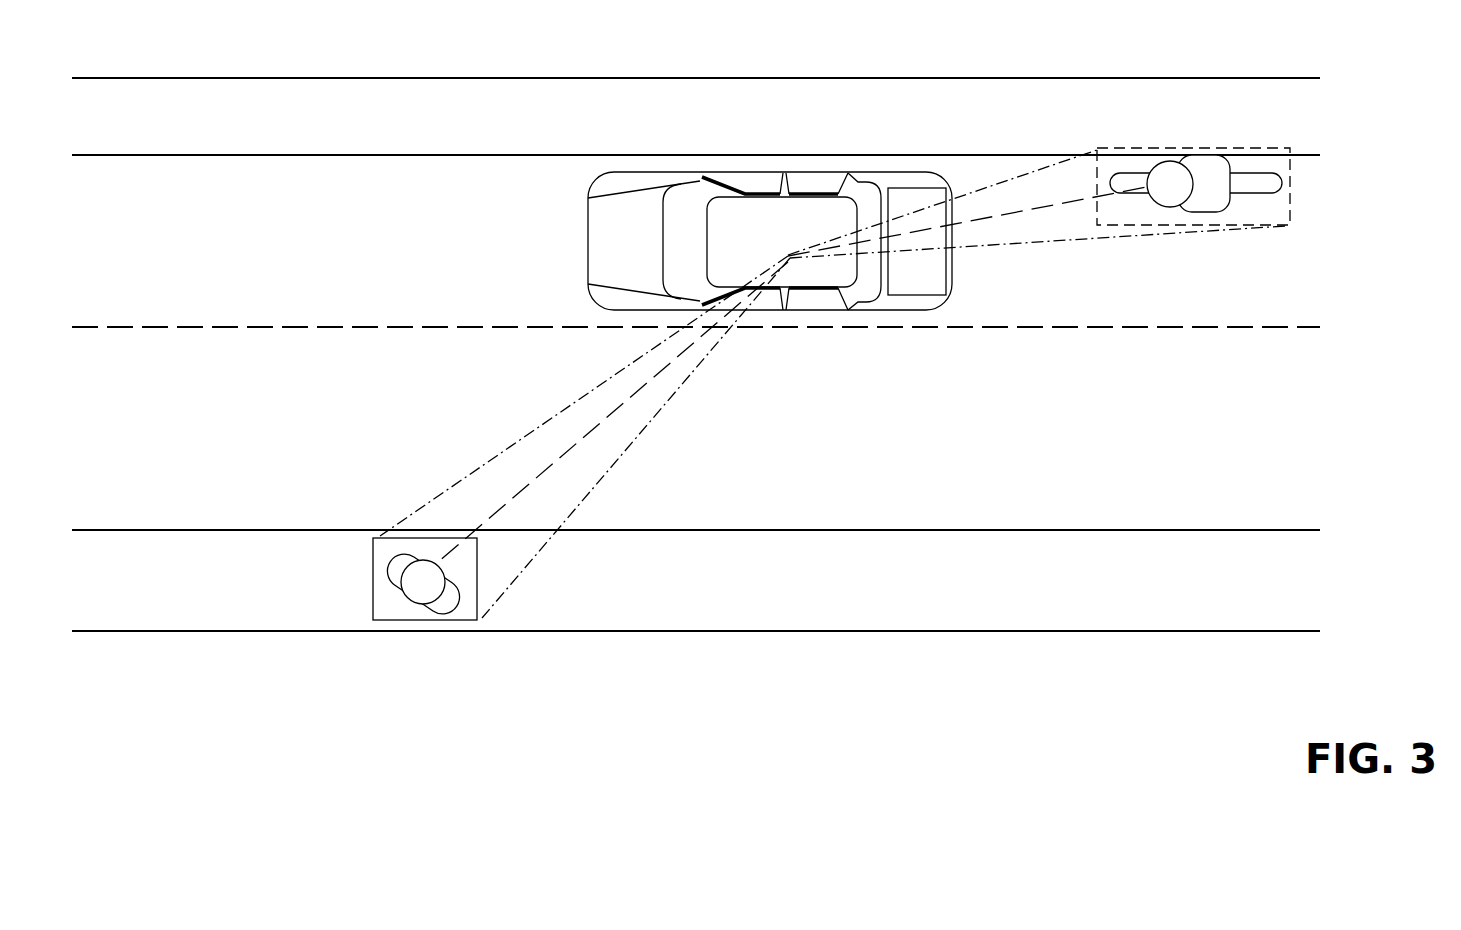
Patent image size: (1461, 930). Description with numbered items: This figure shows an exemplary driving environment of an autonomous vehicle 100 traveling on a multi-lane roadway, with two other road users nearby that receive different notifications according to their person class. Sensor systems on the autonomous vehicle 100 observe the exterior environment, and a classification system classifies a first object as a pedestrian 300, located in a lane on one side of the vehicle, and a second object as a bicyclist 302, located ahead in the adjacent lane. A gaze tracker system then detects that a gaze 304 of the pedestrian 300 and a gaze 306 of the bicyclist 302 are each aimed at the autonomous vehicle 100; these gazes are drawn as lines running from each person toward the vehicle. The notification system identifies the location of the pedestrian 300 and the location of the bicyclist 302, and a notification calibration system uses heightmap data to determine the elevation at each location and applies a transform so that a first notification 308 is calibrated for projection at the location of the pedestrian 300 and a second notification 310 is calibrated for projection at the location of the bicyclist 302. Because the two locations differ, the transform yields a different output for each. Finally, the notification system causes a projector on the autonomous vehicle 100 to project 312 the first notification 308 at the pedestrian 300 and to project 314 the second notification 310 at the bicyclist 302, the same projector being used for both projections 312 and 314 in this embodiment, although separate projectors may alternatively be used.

The autonomous vehicle 100 is at (563, 248).
The pedestrian 300 is at (404, 614).
The bicyclist 302 is at (1150, 162).
The gaze of the pedestrian 304 is at (620, 410).
The gaze of the bicyclist 306 is at (1017, 208).
The first notification 308 is at (373, 586).
The second notification 310 is at (1291, 194).
The projection of the first notification 312 is at (671, 418).
The projection of the second notification 314 is at (1003, 259).